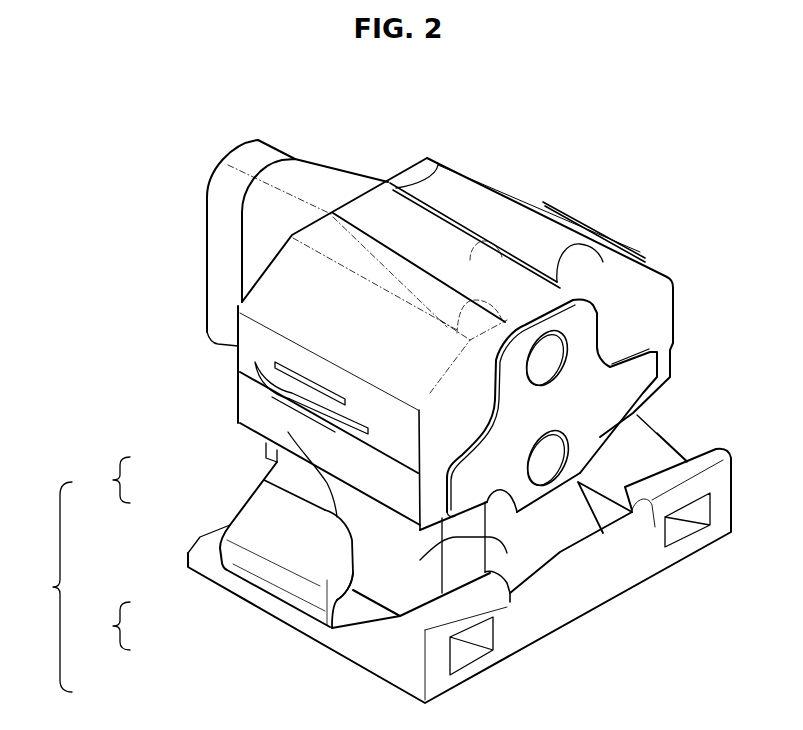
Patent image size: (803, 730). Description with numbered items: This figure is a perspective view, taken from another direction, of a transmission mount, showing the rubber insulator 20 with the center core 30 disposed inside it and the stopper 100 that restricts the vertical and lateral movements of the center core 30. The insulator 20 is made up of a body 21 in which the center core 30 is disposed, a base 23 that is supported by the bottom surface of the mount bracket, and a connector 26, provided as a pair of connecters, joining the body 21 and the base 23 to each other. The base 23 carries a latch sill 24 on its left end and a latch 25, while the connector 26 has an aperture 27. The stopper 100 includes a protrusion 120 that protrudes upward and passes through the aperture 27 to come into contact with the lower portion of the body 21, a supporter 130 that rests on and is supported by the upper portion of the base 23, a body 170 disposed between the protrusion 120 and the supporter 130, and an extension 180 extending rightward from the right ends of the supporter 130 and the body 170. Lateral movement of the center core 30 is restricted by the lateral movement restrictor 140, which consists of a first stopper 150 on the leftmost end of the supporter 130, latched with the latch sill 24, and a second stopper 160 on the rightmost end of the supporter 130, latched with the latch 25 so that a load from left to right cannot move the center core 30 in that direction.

The insulator 20 is at (477, 155).
The body 21 is at (655, 300).
The base 23 is at (586, 600).
The latch sill 24 is at (228, 530).
The latch 25 is at (351, 578).
The connector 26 is at (647, 444).
The aperture 27 is at (240, 423).
The center core 30 is at (230, 135).
The stopper 100 is at (261, 572).
The protrusion 120 is at (270, 463).
The supporter 130 is at (231, 526).
The lateral movement restrictor 140 is at (201, 550).
The first stopper 150 is at (200, 568).
The second stopper 160 is at (322, 655).
The body 170 is at (200, 540).
The extension 180 is at (380, 585).